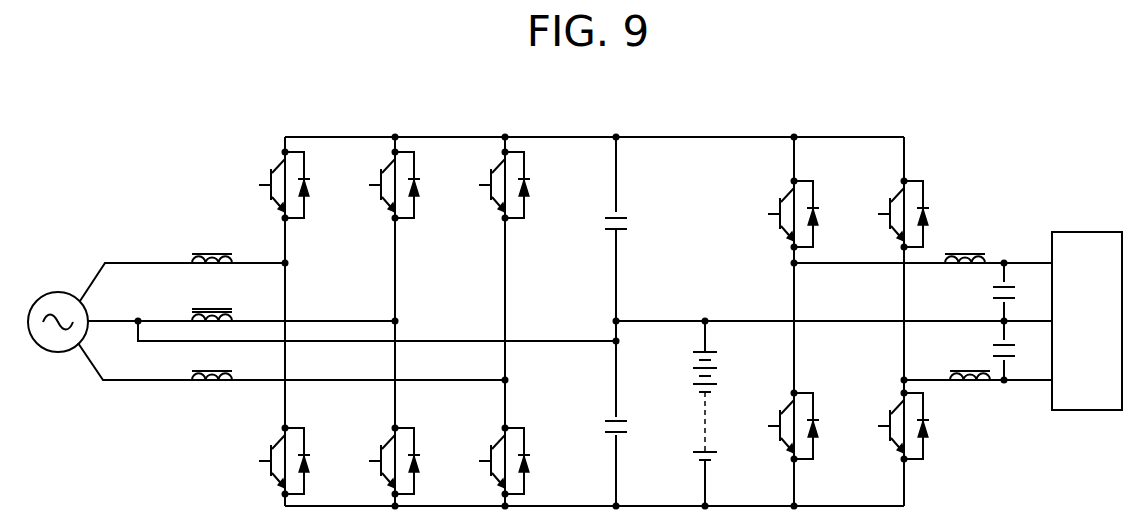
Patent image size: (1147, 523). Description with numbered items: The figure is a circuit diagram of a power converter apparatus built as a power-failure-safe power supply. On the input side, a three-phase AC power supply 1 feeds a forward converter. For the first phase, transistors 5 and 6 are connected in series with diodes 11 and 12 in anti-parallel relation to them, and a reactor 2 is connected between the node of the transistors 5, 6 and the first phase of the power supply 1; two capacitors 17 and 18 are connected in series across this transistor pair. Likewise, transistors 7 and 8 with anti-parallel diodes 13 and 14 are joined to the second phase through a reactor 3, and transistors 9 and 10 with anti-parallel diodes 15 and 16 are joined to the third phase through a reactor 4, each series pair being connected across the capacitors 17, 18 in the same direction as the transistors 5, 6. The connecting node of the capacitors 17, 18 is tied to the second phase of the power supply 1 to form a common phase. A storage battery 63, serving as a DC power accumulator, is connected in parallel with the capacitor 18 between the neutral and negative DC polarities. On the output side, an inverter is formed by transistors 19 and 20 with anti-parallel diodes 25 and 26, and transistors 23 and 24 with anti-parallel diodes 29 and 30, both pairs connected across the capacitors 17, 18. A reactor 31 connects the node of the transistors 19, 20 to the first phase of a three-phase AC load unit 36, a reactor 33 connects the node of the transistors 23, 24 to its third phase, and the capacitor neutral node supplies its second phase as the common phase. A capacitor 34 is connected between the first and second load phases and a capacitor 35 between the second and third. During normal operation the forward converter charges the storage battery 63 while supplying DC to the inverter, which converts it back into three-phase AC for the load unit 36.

The three-phase AC power supply 1 is at (62, 353).
The reactor 2 is at (208, 250).
The reactor 3 is at (208, 310).
The reactor 4 is at (210, 390).
The transistor 5 is at (272, 168).
The transistor 6 is at (272, 442).
The transistor 7 is at (382, 168).
The transistor 8 is at (382, 442).
The transistor 9 is at (492, 168).
The transistor 10 is at (492, 442).
The diode 11 is at (311, 192).
The diode 12 is at (311, 466).
The diode 13 is at (421, 192).
The diode 14 is at (421, 466).
The diode 15 is at (531, 192).
The diode 16 is at (531, 466).
The capacitor 17 is at (630, 225).
The capacitor 18 is at (630, 428).
The transistor 19 is at (782, 192).
The transistor 20 is at (782, 406).
The transistor 23 is at (892, 192).
The transistor 24 is at (892, 406).
The diode 25 is at (820, 220).
The diode 26 is at (820, 430).
The diode 29 is at (938, 202).
The diode 30 is at (930, 430).
The reactor 31 is at (968, 248).
The reactor 33 is at (964, 392).
The capacitor 34 is at (1005, 284).
The capacitor 35 is at (1006, 360).
The three-phase AC load unit 36 is at (1086, 410).
The storage battery 63 is at (690, 370).